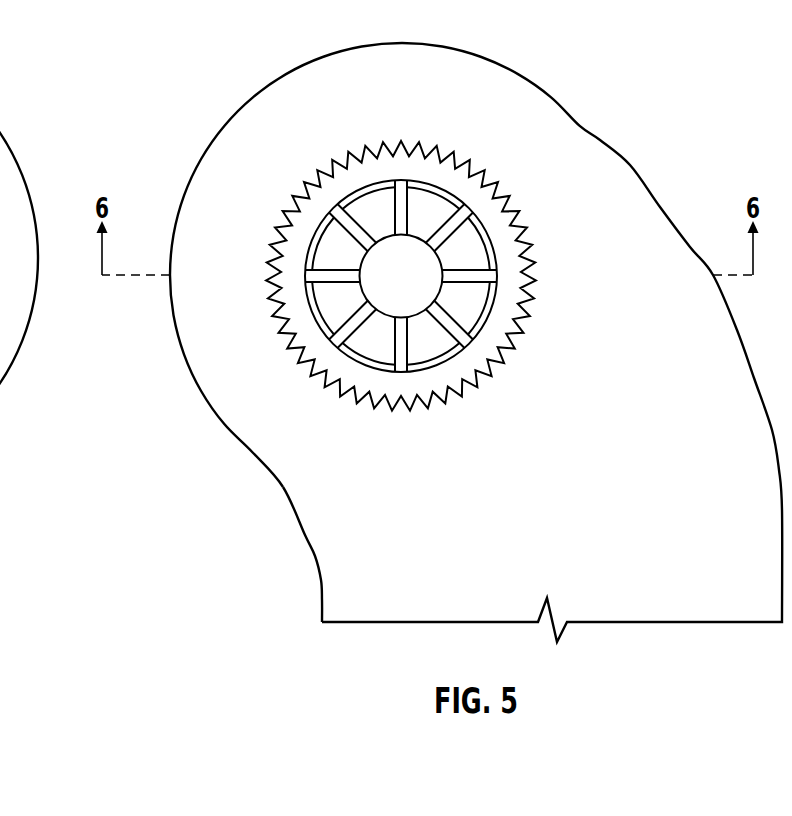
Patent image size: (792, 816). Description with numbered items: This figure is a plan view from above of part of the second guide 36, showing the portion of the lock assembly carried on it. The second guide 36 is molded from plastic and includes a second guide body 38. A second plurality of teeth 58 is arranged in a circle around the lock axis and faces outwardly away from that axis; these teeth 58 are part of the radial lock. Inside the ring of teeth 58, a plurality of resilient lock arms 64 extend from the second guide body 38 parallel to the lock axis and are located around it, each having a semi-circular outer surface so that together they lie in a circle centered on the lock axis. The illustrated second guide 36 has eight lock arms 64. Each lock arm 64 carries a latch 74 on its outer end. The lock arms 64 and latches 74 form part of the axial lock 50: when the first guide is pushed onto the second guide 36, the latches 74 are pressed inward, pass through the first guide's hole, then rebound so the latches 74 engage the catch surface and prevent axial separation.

The second guide 36 is at (308, 548).
The second guide body 38 is at (584, 127).
The axial lock 50 is at (413, 254).
The second plurality of teeth 58 is at (490, 368).
The resilient lock arms 64 is at (372, 207).
The latch 74 is at (363, 193).